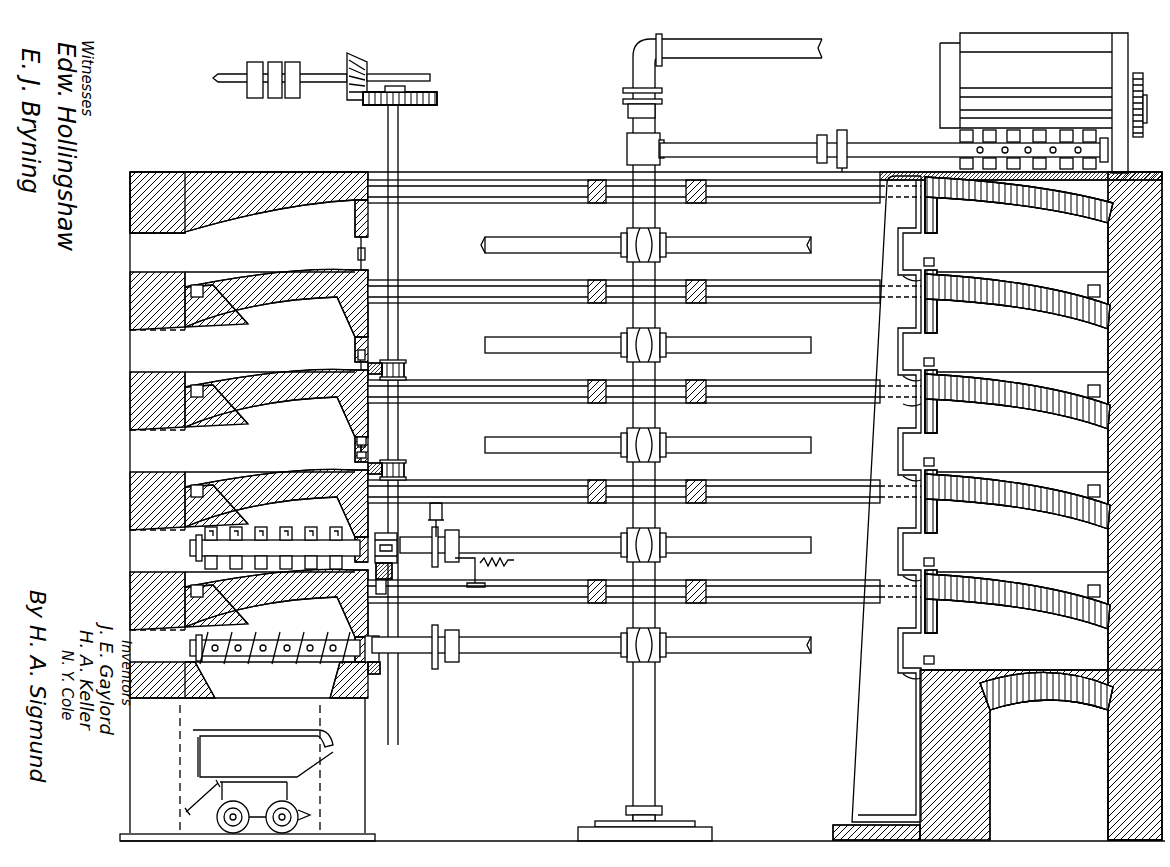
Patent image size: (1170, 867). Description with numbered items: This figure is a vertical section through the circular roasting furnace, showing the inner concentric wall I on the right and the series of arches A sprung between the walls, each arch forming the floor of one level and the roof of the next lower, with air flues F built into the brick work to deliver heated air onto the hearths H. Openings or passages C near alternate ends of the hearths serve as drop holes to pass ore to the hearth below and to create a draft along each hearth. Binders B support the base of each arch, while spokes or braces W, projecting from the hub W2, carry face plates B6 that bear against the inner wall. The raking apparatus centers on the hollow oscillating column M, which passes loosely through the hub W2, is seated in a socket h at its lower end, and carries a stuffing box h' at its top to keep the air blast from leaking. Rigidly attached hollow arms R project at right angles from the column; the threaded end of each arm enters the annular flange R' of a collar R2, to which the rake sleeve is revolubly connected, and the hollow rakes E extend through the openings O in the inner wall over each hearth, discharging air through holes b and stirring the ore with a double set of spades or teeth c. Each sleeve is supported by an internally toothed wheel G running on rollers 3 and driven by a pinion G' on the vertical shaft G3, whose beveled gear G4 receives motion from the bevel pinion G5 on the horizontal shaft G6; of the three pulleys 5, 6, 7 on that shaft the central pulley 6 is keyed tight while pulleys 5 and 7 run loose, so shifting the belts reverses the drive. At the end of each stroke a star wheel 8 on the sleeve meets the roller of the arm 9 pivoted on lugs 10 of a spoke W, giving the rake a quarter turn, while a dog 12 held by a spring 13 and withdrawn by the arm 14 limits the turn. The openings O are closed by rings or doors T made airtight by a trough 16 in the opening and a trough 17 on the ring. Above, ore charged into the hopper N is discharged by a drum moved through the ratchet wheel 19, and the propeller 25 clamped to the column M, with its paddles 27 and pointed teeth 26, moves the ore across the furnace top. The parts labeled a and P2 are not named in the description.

The pulley 5 is at (255, 69).
The central pulley 6 is at (275, 69).
The pulley 7 is at (292, 69).
The bevel pinion G5 is at (367, 65).
The horizontal shaft G6 is at (405, 61).
The beveled gear G4 is at (365, 104).
The vertical shaft G3 is at (412, 432).
The internally toothed wheel G is at (399, 403).
The pinion G' is at (402, 419).
The stuffing box h' is at (722, 103).
The seat or socket h is at (645, 823).
The hollow column M is at (657, 420).
The hopper N is at (1015, 95).
The ratchet wheel 19 is at (1140, 73).
The flights or paddles 27 is at (960, 136).
The revolving rake or propeller 25 is at (960, 163).
The pointed teeth 26 is at (1108, 150).
The hollow arms R is at (646, 450).
The annular screw-threaded flange R' is at (499, 582).
The collar R2 is at (455, 676).
The star wheel 8 is at (433, 680).
The arm 9 is at (430, 514).
The lugs or ears 10 is at (386, 537).
The dog 12 is at (465, 568).
The spring 13 is at (512, 568).
The arm 14 is at (480, 575).
The bearing a is at (392, 571).
The rollers 3 is at (380, 594).
The spokes or braces W is at (644, 400).
The hub W2 is at (644, 402).
The openings O is at (357, 442).
The air flues F is at (1094, 585).
The hearth H is at (646, 471).
The openings or passages C is at (249, 453).
The arches A is at (688, 436).
The rings or doors T is at (357, 441).
The trough 17 is at (364, 448).
The trough 16 is at (356, 455).
The binders B is at (877, 418).
The face plates B6 is at (904, 409).
The inner concentric wall I is at (937, 418).
The rake E is at (275, 586).
The spades or teeth c is at (273, 573).
The holes b is at (290, 640).
The arched opening P2 is at (1041, 755).